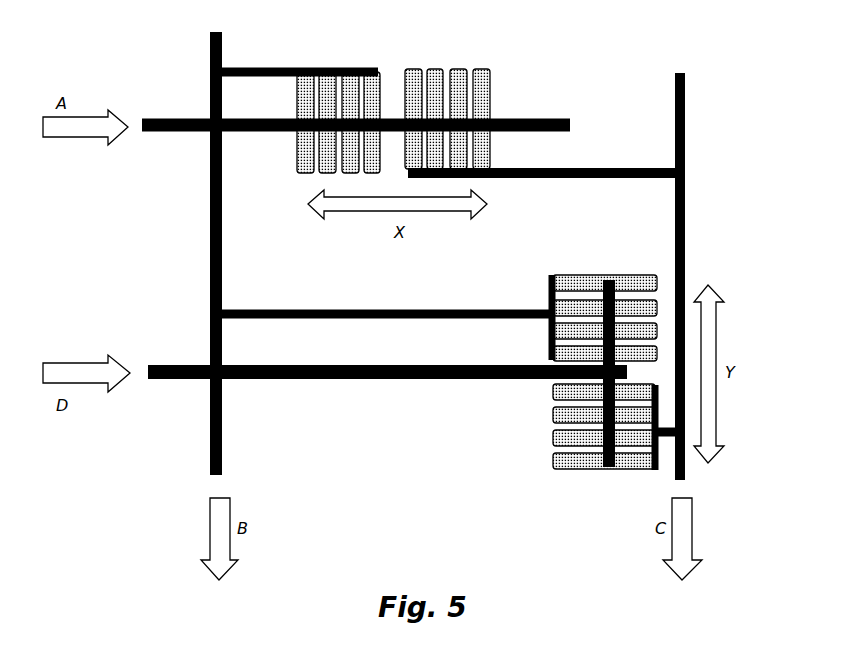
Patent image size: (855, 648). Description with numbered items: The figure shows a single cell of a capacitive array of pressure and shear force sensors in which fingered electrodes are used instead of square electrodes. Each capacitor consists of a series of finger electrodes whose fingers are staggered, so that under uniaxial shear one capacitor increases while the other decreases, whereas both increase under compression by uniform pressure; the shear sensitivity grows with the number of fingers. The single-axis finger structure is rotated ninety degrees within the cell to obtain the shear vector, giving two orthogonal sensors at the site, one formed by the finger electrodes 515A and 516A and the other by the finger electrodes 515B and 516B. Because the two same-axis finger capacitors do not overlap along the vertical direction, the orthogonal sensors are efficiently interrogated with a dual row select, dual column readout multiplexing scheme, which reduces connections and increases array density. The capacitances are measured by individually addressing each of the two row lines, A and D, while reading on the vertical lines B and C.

The finger electrode 516A is at (268, 68).
The finger electrode 515A is at (512, 117).
The finger electrode 516B is at (685, 241).
The finger electrode 515B is at (377, 380).